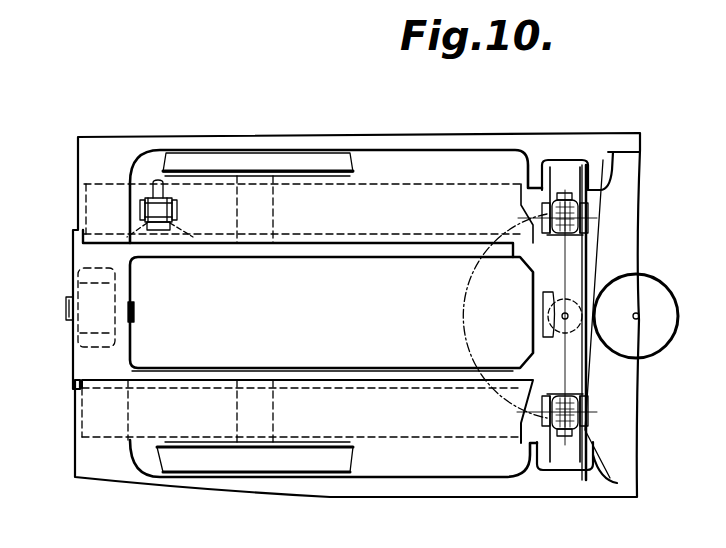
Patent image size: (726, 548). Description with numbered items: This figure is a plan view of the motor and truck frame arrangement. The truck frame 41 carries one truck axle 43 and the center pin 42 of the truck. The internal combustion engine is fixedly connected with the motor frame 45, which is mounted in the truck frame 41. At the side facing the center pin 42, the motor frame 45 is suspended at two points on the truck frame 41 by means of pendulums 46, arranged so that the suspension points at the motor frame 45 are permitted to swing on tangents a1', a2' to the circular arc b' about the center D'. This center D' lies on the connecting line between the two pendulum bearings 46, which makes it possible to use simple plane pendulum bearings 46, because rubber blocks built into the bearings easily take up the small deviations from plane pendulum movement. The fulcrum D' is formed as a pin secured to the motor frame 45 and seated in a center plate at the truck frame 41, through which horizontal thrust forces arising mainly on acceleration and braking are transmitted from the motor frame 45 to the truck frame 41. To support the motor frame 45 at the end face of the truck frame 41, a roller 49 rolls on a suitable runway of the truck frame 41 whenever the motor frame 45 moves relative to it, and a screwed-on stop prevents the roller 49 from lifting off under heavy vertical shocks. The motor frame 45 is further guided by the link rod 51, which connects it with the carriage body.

The truck frame 41 is at (560, 140).
The center pin of the truck 42 is at (657, 297).
The truck axle 43 is at (262, 291).
The motor frame 45 is at (398, 266).
The pendulums 46 is at (602, 203).
The roller 49 is at (88, 280).
The link rod 51 is at (157, 180).
The tangent a1' is at (553, 246).
The tangent a2' is at (553, 383).
The circular arc b' is at (504, 316).
The center D' is at (549, 317).